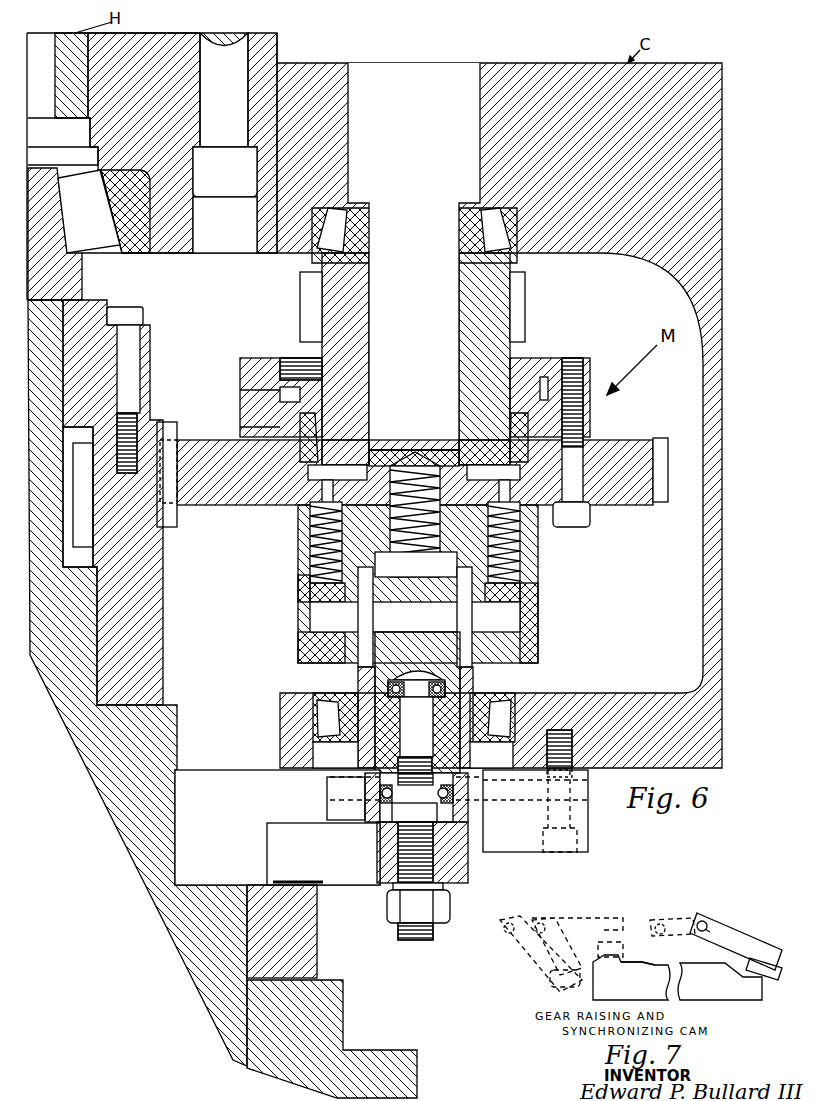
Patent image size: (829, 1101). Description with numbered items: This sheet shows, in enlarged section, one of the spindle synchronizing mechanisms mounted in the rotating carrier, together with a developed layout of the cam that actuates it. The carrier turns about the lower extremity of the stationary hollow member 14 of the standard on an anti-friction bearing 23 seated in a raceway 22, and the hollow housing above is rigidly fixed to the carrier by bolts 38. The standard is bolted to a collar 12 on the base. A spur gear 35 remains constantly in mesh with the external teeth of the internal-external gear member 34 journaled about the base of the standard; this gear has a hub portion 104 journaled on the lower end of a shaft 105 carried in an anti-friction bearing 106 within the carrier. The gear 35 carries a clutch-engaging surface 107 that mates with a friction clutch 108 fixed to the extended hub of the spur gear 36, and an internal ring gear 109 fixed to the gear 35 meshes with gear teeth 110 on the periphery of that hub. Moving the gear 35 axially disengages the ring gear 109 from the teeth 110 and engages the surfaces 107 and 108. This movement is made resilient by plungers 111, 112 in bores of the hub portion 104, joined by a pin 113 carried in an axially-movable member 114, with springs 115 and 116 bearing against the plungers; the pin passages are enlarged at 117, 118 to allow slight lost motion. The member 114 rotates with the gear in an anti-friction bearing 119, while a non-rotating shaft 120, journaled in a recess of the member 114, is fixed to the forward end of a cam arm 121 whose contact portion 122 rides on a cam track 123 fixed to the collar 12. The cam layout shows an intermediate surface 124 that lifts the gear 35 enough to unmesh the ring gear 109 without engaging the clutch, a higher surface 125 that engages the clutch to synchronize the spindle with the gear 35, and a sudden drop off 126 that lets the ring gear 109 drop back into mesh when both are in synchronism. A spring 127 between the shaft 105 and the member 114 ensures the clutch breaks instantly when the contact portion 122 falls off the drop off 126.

In FIG. 6, the collar 12 is at (343, 998).
In FIG. 6, the hollow member 14 is at (80, 738).
In FIG. 6, the raceway 22 is at (140, 250).
In FIG. 6, the anti-friction bearing 23 is at (100, 240).
In FIG. 6, the internal-external gear member 34 is at (150, 627).
In FIG. 6, the spur gear 35 is at (248, 498).
In FIG. 6, the spur gear 36 is at (526, 300).
In FIG. 6, the bolts 38 is at (230, 184).
In FIG. 6, the hub portion 104 is at (538, 566).
In FIG. 6, the shaft 105 is at (428, 212).
In FIG. 6, the anti-friction bearing 106 is at (498, 243).
In FIG. 6, the clutch-engaging surface 107 is at (246, 432).
In FIG. 6, the friction clutch 108 is at (318, 444).
In FIG. 6, the internal ring gear 109 is at (548, 362).
In FIG. 6, the gear teeth 110 is at (242, 392).
In FIG. 6, the plunger 111 is at (300, 603).
In FIG. 6, the plunger 112 is at (537, 603).
In FIG. 6, the pin 113 is at (298, 625).
In FIG. 6, the axially-movable member 114 is at (425, 598).
In FIG. 6, the spring 115 is at (300, 560).
In FIG. 6, the spring 116 is at (530, 530).
In FIG. 6, the enlarged passage 117 is at (349, 600).
In FIG. 6, the enlarged passage 118 is at (487, 598).
In FIG. 6, the anti-friction bearing 119 is at (513, 698).
In FIG. 6, the shaft 120 is at (372, 757).
In FIG. 6, the cam arm 121 is at (470, 862).
In FIG. 6, the contact portion 122 is at (286, 880).
In FIG. 7, the contact portion 122 is at (758, 948).
In FIG. 6, the cam track 123 is at (322, 898).
In FIG. 7, the cam track 123 is at (743, 990).
In FIG. 7, the intermediate surface 124 is at (654, 967).
In FIG. 7, the higher surface 125 is at (631, 977).
In FIG. 7, the drop off 126 is at (592, 962).
In FIG. 6, the spring 127 is at (417, 468).